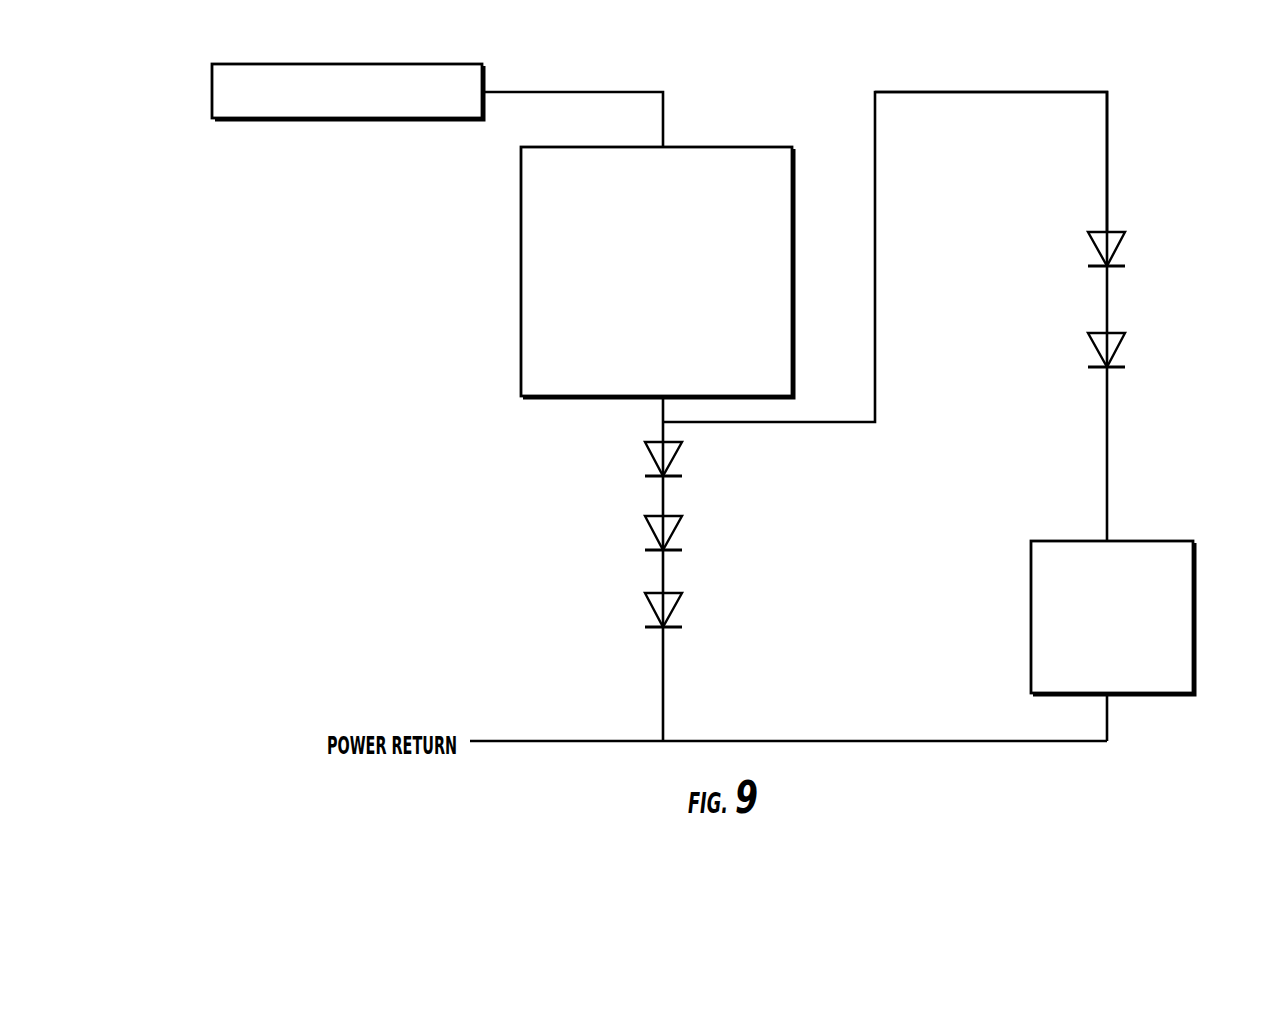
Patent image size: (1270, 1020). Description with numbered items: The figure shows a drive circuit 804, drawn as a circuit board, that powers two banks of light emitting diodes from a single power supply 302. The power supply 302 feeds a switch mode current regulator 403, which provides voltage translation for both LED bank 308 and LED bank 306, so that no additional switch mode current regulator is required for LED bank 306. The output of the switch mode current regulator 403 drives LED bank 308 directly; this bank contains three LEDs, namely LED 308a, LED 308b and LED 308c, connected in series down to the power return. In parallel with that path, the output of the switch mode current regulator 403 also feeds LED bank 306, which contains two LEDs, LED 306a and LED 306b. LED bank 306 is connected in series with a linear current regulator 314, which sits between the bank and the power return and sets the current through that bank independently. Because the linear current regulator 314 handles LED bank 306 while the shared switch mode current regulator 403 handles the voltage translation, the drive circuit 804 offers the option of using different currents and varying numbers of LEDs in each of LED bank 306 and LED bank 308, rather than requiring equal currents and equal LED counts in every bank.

The power supply 302 is at (212, 105).
The switch mode current regulator 403 is at (521, 316).
The linear current regulator 314 is at (1196, 590).
The drive circuit 804 is at (1133, 132).
The LED bank 308 is at (679, 536).
The LED 308a is at (682, 451).
The LED 308b is at (725, 524).
The LED 308c is at (725, 603).
The LED bank 306 is at (1107, 286).
The LED 306a is at (1120, 247).
The LED 306b is at (1120, 350).